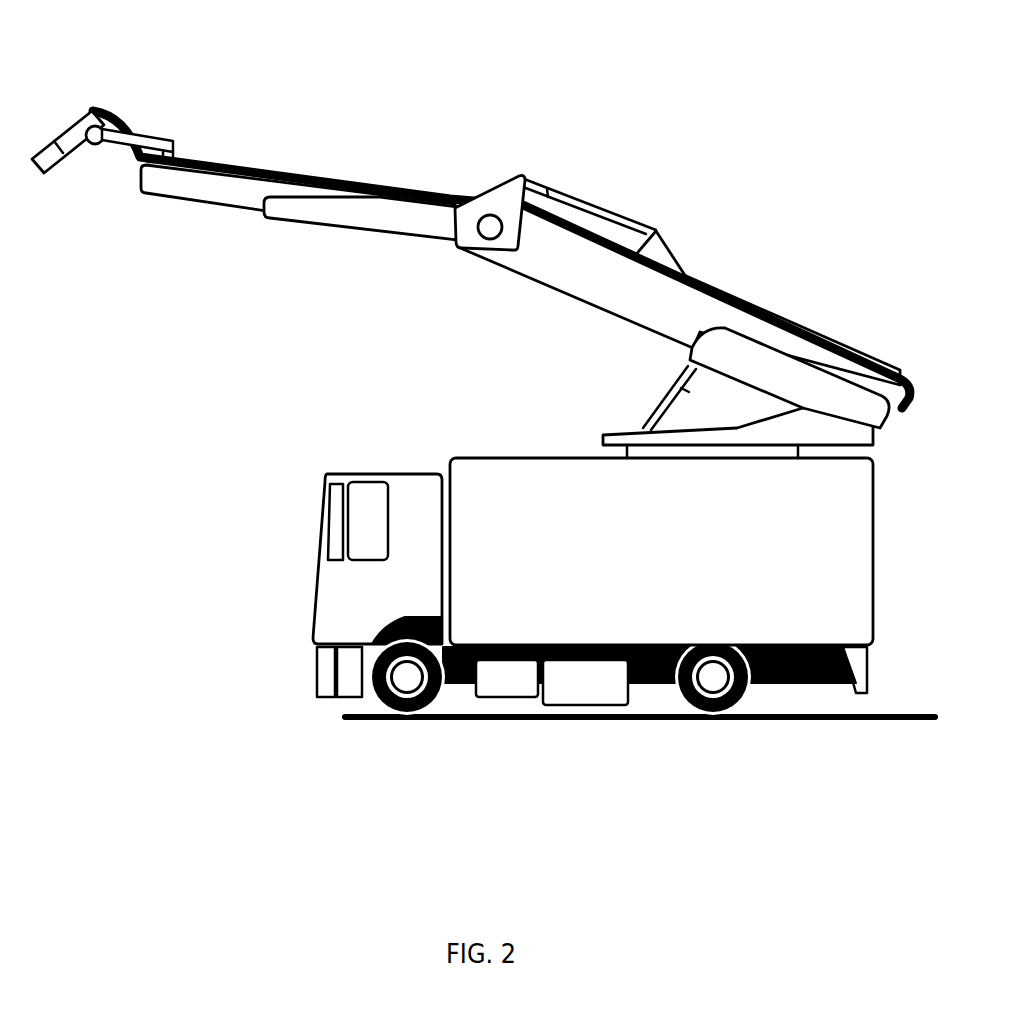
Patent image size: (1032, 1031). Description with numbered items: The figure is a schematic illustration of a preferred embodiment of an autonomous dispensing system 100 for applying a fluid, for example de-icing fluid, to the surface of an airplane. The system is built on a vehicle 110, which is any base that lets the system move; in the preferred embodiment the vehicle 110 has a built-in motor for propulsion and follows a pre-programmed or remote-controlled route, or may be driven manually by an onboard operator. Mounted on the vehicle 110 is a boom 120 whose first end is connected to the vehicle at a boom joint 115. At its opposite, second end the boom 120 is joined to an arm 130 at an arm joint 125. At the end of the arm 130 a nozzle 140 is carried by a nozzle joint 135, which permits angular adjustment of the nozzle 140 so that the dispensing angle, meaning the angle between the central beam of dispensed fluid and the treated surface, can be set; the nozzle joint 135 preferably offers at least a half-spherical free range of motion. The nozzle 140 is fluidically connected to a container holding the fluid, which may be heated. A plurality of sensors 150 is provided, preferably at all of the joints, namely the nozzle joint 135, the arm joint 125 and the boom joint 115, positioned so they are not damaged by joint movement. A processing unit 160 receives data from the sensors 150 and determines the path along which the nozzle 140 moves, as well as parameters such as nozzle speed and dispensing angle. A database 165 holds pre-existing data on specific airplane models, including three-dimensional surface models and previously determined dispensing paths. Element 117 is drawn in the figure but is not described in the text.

The autonomous dispensing system 100 is at (802, 268).
The vehicle 110 is at (548, 565).
The boom joint 115 is at (587, 565).
The storage compartment 117 is at (623, 565).
The boom 120 is at (693, 313).
The arm joint 125 is at (481, 220).
The arm 130 is at (248, 192).
The nozzle joint 135 is at (157, 160).
The nozzle 140 is at (30, 158).
The sensors 150 is at (173, 162).
The processing unit 160 is at (655, 565).
The database 165 is at (690, 565).